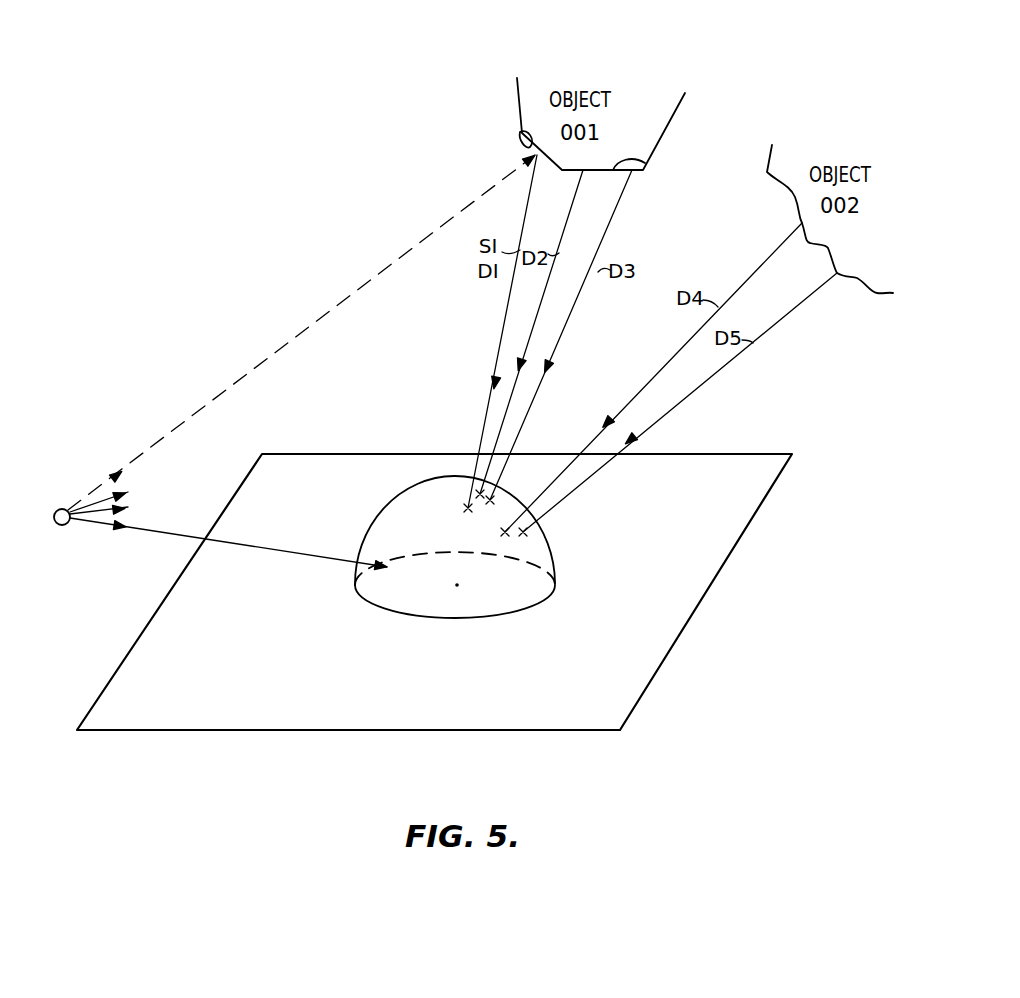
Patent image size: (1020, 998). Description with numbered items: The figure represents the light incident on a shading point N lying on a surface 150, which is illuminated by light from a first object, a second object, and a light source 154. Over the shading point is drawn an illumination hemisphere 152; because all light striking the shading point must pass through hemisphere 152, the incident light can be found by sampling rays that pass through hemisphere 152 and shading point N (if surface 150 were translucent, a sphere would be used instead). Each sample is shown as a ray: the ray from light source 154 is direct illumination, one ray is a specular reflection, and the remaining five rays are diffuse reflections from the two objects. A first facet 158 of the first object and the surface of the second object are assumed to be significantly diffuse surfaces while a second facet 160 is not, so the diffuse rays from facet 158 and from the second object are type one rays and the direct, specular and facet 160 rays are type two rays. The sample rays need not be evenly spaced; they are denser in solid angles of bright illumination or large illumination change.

The surface 150 is at (762, 462).
The illumination hemisphere 152 is at (550, 542).
The light source 154 is at (62, 526).
The facet 158 is at (516, 133).
The facet 160 is at (645, 163).